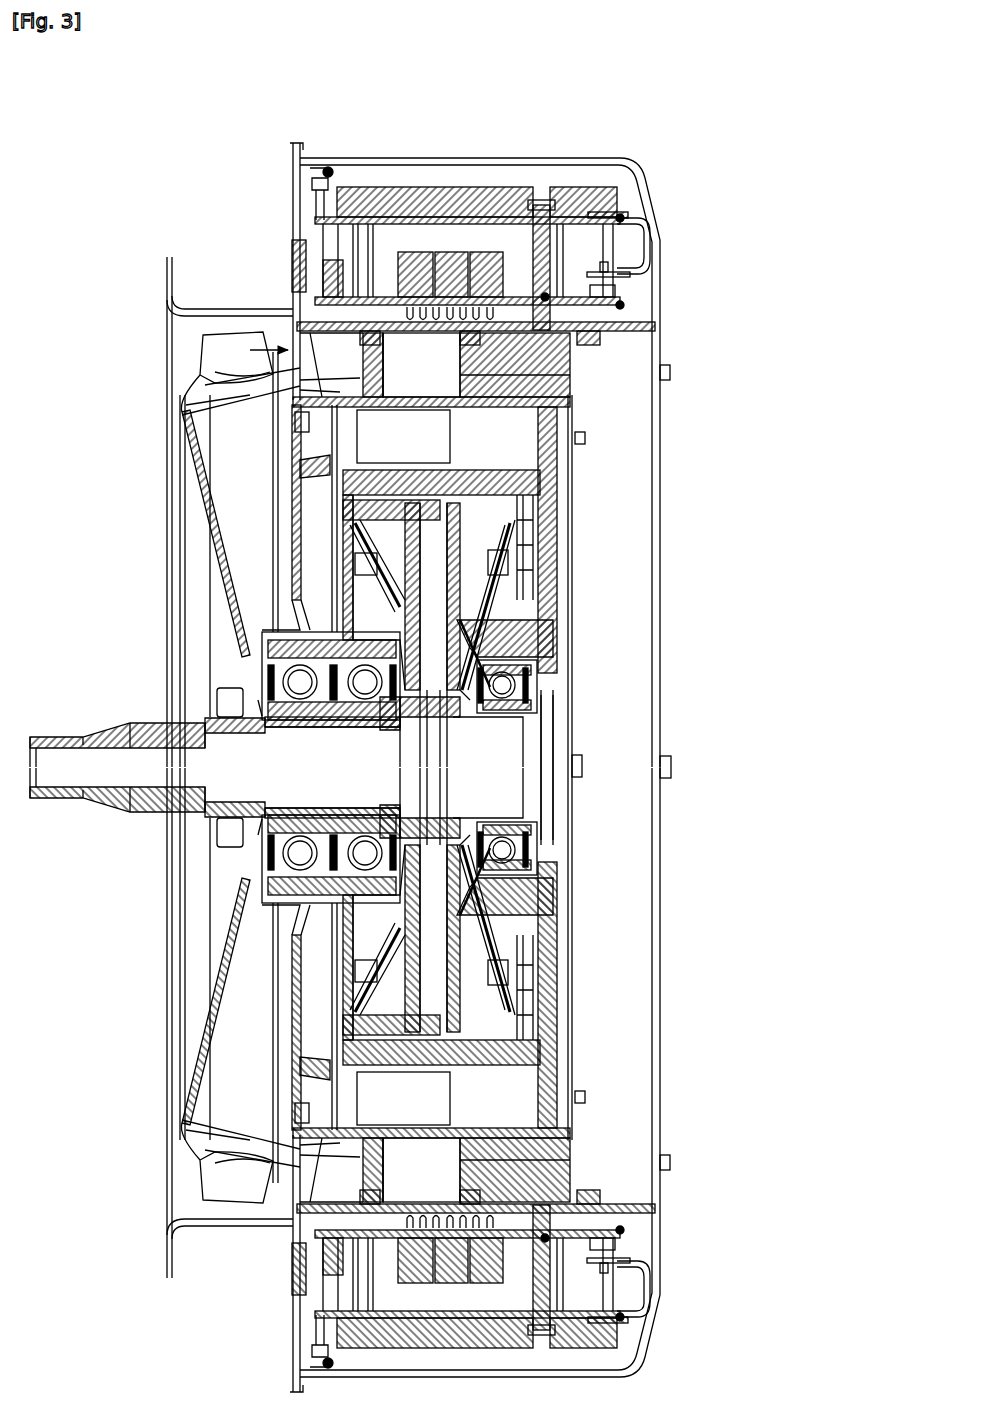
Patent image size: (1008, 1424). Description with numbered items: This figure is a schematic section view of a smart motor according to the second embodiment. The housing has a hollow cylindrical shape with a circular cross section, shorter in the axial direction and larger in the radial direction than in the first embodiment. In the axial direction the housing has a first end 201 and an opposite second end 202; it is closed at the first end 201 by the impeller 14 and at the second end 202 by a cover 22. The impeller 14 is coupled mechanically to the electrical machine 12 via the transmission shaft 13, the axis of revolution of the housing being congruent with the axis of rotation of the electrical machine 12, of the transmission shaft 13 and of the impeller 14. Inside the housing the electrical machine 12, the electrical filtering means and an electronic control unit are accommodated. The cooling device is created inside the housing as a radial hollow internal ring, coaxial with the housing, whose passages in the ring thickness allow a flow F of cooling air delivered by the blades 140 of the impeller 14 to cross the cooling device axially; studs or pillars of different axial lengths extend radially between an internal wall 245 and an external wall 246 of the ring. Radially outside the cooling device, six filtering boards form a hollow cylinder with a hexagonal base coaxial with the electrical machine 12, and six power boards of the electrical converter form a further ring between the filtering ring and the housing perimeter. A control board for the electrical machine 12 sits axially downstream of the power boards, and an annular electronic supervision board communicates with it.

The electrical machine 12 is at (565, 878).
The transmission shaft 13 is at (68, 783).
The impeller 14 is at (194, 357).
The blades 140 is at (233, 350).
The flow of cooling air F is at (253, 350).
The first end 201 is at (171, 767).
The second end 202 is at (680, 622).
The cover 22 is at (662, 526).
The internal wall 245 is at (290, 405).
The external wall 246 is at (297, 288).